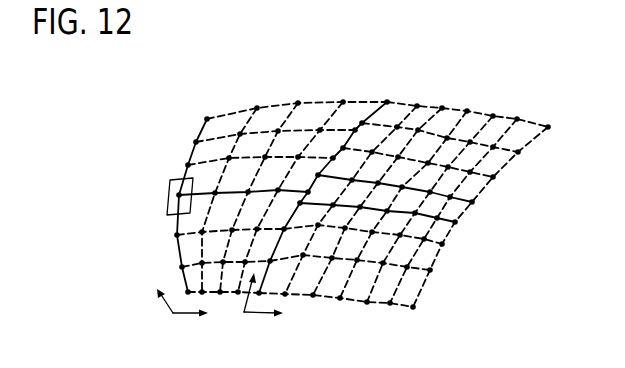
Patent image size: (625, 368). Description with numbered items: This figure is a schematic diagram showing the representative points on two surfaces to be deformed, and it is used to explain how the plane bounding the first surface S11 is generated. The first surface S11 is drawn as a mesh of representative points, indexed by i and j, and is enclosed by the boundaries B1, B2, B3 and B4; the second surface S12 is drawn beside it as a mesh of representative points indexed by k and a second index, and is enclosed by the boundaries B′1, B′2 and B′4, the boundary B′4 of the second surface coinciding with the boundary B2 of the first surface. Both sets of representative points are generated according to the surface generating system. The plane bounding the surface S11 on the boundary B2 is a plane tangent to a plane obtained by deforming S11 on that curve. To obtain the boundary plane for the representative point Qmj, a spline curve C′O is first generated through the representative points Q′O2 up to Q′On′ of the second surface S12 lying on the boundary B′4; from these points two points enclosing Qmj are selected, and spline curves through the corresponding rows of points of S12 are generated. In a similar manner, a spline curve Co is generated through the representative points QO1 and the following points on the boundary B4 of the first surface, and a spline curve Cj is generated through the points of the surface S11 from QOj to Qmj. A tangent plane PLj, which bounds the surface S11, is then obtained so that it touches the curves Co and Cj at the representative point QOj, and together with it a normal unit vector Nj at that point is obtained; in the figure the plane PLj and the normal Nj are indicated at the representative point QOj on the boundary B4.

The boundary B4 is at (189, 163).
The spline curve Co is at (155, 200).
The boundary B3 is at (318, 100).
The boundary B1 is at (232, 294).
The boundary B2 is at (361, 122).
The boundary B′4 is at (409, 179).
The spline curve C′O is at (409, 179).
The spline curve Cj is at (248, 190).
The normal unit vector Nj is at (165, 193).
The tangent plane PLj is at (144, 209).
The representative point QOj is at (171, 182).
The representative point Qmj is at (307, 190).
The surface S11 is at (271, 113).
The surface S12 is at (497, 165).
The representative point Q′On′ is at (446, 107).
The boundary B′2 is at (456, 225).
The boundary B′1 is at (356, 302).
The representative point Q′O2 is at (284, 231).
The representative point QO1 is at (259, 295).
The index i is at (196, 313).
The index j is at (159, 292).
The index k is at (273, 313).